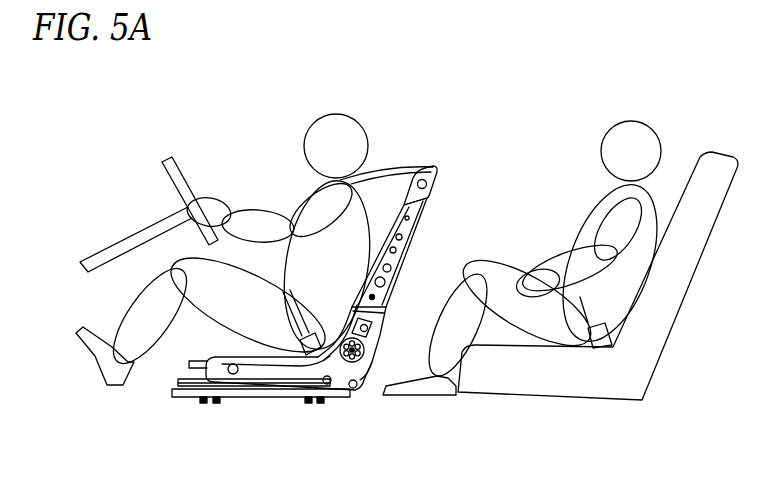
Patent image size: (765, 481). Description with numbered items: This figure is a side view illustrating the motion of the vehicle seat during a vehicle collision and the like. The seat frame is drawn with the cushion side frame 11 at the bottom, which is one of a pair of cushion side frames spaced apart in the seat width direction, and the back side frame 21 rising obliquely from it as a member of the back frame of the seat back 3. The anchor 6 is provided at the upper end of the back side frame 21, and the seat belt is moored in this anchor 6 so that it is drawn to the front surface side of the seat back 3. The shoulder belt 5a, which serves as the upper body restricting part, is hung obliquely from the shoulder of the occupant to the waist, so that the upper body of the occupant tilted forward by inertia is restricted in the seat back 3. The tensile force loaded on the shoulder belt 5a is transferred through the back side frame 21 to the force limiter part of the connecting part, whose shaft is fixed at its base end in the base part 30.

The seat back 3 is at (440, 184).
The shoulder belt 5a is at (397, 166).
The anchor 6 is at (435, 165).
The back side frame 21 is at (412, 235).
The base part 30 is at (385, 336).
The cushion side frame 11 is at (272, 373).